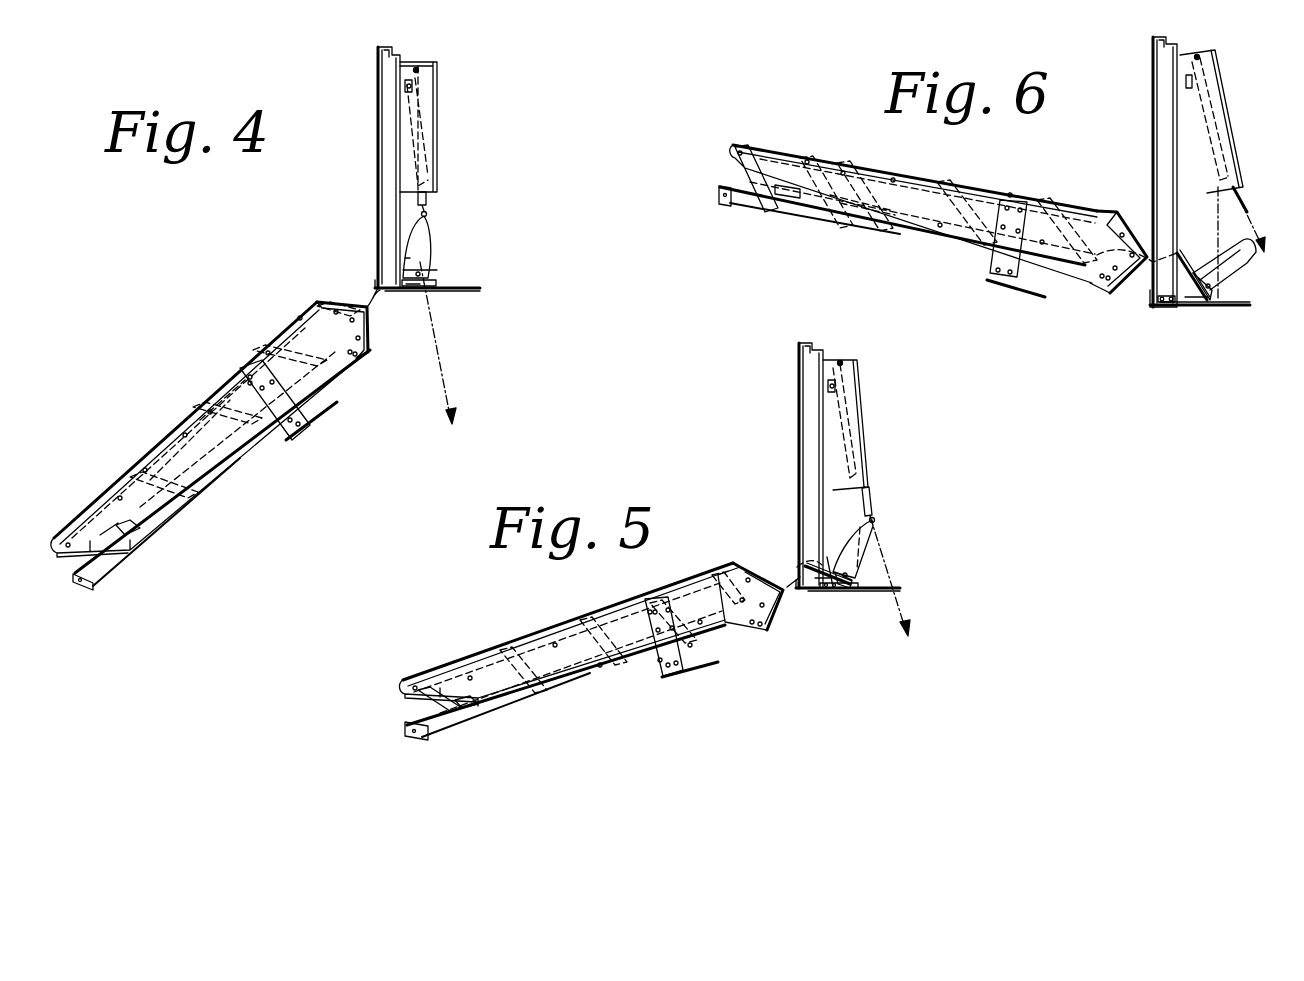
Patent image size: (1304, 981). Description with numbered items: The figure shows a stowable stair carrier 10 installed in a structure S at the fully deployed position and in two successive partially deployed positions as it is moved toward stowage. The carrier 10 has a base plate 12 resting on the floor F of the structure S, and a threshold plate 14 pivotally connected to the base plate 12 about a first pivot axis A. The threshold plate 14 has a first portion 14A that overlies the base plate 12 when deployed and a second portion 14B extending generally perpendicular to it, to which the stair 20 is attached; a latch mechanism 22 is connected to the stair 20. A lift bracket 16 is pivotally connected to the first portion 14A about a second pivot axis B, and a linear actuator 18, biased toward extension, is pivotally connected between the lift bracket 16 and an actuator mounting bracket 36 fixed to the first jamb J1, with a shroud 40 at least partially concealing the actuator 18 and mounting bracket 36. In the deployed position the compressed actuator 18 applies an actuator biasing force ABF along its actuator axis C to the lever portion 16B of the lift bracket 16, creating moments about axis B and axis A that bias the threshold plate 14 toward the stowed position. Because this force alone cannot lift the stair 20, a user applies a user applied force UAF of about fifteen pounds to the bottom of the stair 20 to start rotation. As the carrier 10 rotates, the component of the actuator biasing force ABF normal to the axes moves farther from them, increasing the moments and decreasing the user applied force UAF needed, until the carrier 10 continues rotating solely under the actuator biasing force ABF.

In FIG. 4, the stowable stair carrier 10 is at (379, 442).
In FIG. 5, the stowable stair carrier 10 is at (779, 668).
In FIG. 6, the stowable stair carrier 10 is at (1068, 315).
In FIG. 4, the base plate 12 is at (420, 292).
In FIG. 5, the base plate 12 is at (847, 590).
In FIG. 6, the base plate 12 is at (1203, 308).
In FIG. 4, the threshold plate 14 is at (377, 303).
In FIG. 5, the threshold plate 14 is at (830, 592).
In FIG. 6, the threshold plate 14 is at (1186, 300).
In FIG. 5, the first portion of threshold plate 14A is at (828, 563).
In FIG. 6, the first portion of threshold plate 14A is at (1183, 258).
In FIG. 5, the second portion of threshold plate 14B is at (780, 615).
In FIG. 6, the second portion of threshold plate 14B is at (1122, 272).
In FIG. 4, the lift bracket 16 is at (418, 232).
In FIG. 5, the lift bracket 16 is at (870, 538).
In FIG. 4, the lever portion of lift bracket 16B is at (418, 252).
In FIG. 5, the lever portion of lift bracket 16B is at (848, 560).
In FIG. 4, the actuator 18 is at (428, 200).
In FIG. 5, the actuator 18 is at (870, 503).
In FIG. 4, the stair 20 is at (237, 442).
In FIG. 5, the stair 20 is at (590, 676).
In FIG. 6, the stair 20 is at (900, 168).
In FIG. 4, the latch mechanism 22 is at (302, 428).
In FIG. 5, the latch mechanism 22 is at (676, 680).
In FIG. 6, the latch mechanism 22 is at (995, 248).
In FIG. 4, the actuator mounting bracket 36 is at (405, 84).
In FIG. 5, the actuator mounting bracket 36 is at (828, 384).
In FIG. 4, the shroud 40 is at (433, 105).
In FIG. 5, the shroud 40 is at (858, 410).
In FIG. 6, the shroud 40 is at (1211, 121).
In FIG. 4, the first jamb J1 is at (378, 150).
In FIG. 5, the first jamb J1 is at (800, 448).
In FIG. 6, the first jamb J1 is at (1153, 75).
In FIG. 4, the structure S is at (370, 60).
In FIG. 5, the structure S is at (783, 413).
In FIG. 6, the structure S is at (1197, 314).
In FIG. 4, the first pivot axis A is at (430, 283).
In FIG. 4, the second pivot axis B is at (409, 292).
In FIG. 4, the actuator axis C is at (440, 352).
In FIG. 4, the floor F is at (455, 292).
In FIG. 5, the floor F is at (870, 592).
In FIG. 6, the floor F is at (1236, 308).
In FIG. 4, the actuator biasing force ABF is at (449, 417).
In FIG. 5, the actuator biasing force ABF is at (904, 588).
In FIG. 6, the actuator biasing force ABF is at (1262, 233).
In FIG. 4, the user applied force UAF is at (124, 546).
In FIG. 5, the user applied force UAF is at (462, 729).
In FIG. 6, the user applied force UAF is at (746, 212).